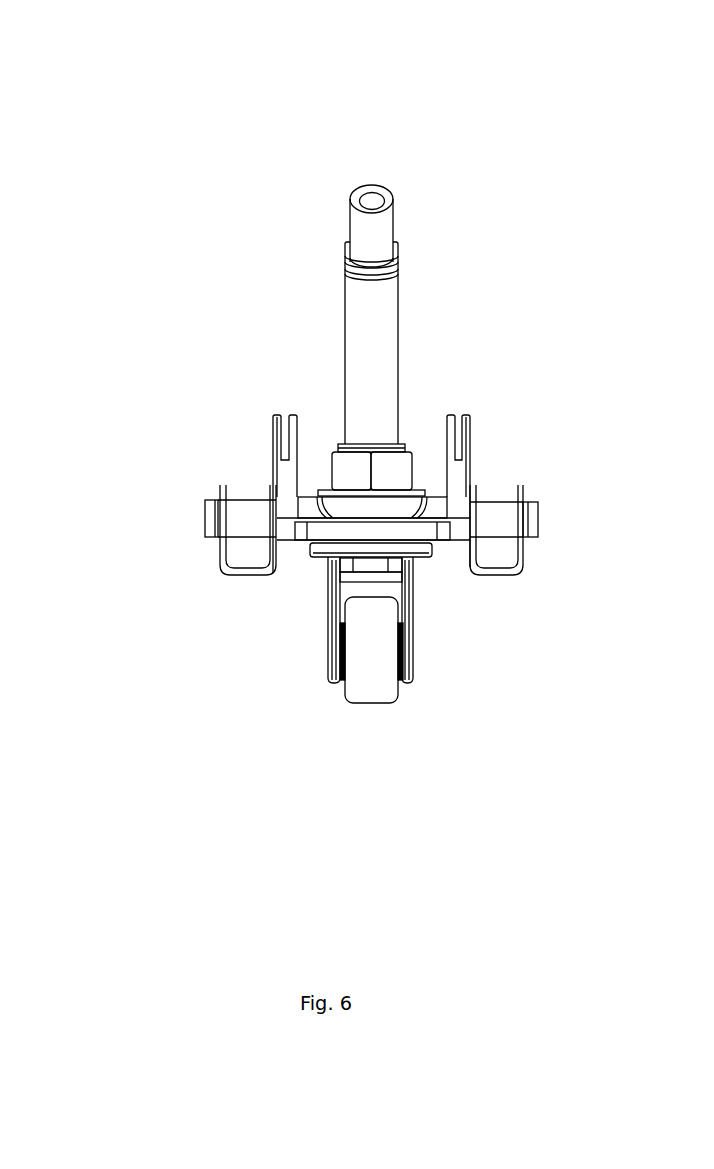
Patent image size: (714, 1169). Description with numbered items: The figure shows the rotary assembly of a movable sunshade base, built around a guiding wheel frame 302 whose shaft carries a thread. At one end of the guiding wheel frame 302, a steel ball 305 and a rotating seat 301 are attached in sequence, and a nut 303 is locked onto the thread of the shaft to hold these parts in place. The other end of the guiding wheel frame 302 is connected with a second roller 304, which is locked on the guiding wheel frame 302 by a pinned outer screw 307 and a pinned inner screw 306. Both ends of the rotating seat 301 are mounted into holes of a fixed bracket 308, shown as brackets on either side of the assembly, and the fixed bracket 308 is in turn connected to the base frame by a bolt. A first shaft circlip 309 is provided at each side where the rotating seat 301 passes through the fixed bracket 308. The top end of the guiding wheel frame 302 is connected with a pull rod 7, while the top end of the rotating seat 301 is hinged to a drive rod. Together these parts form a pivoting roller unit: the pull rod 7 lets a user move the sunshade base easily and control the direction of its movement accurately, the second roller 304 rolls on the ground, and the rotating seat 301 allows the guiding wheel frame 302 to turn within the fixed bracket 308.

The pull rod 7 is at (372, 205).
The rotating seat 301 is at (449, 424).
The guiding wheel frame 302 is at (363, 348).
The nut 303 is at (380, 470).
The second roller 304 is at (375, 660).
The steel ball 305 is at (417, 547).
The pinned inner screw 306 is at (410, 650).
The pinned outer screw 307 is at (330, 647).
The fixed bracket 308 is at (242, 562).
The first shaft circlip 309 is at (267, 497).